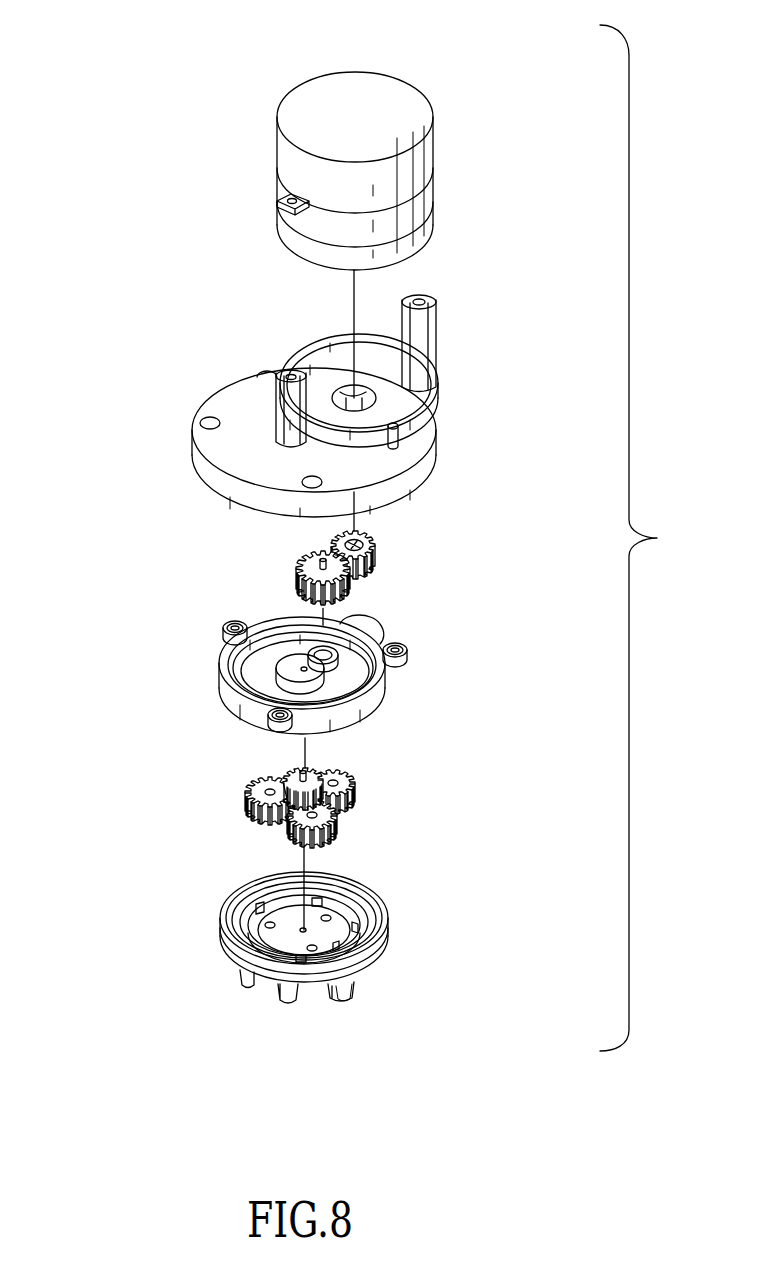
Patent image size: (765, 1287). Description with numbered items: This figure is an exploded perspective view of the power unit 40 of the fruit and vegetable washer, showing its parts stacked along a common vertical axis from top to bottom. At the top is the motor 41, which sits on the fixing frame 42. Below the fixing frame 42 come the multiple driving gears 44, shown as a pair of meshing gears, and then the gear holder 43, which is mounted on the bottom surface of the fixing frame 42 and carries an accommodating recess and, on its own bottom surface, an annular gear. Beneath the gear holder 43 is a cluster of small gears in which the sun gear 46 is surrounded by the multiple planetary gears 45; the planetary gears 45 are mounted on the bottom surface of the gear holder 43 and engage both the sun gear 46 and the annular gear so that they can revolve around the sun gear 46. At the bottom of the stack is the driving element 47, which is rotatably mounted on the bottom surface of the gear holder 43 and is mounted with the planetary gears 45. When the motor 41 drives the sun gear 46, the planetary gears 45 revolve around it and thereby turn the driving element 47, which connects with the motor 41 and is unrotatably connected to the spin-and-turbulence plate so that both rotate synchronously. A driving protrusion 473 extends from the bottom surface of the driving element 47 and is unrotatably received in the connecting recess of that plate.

The power unit 40 is at (160, 78).
The motor 41 is at (442, 78).
The fixing frame 42 is at (452, 394).
The gear holder 43 is at (210, 655).
The driving gears 44 is at (378, 560).
The planetary gears 45 is at (250, 797).
The sun gear 46 is at (325, 768).
The driving element 47 is at (395, 965).
The driving protrusion 473 is at (380, 1043).